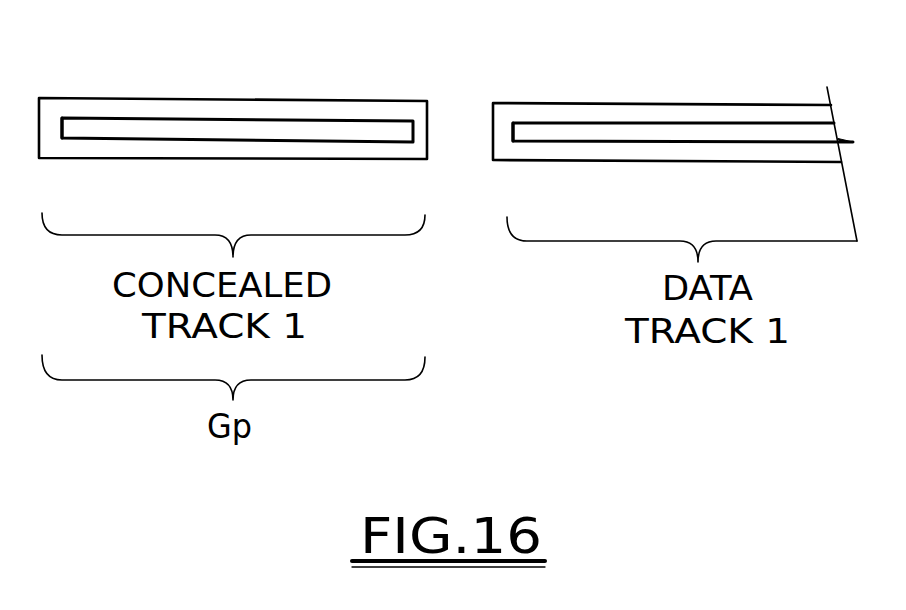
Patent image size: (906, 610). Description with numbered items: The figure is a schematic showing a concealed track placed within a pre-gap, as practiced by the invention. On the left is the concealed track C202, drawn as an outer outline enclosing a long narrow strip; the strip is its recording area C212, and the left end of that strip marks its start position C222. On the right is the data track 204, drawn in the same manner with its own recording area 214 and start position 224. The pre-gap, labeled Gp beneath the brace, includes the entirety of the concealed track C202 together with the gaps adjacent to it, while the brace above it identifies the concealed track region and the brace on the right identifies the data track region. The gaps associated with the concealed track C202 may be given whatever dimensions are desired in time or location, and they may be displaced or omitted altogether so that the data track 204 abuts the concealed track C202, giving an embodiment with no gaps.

The concealed track C202 is at (97, 112).
The recording area C212 is at (135, 133).
The start position C222 is at (63, 128).
The data track 204 is at (548, 115).
The recording area 214 is at (587, 133).
The start position 224 is at (515, 133).